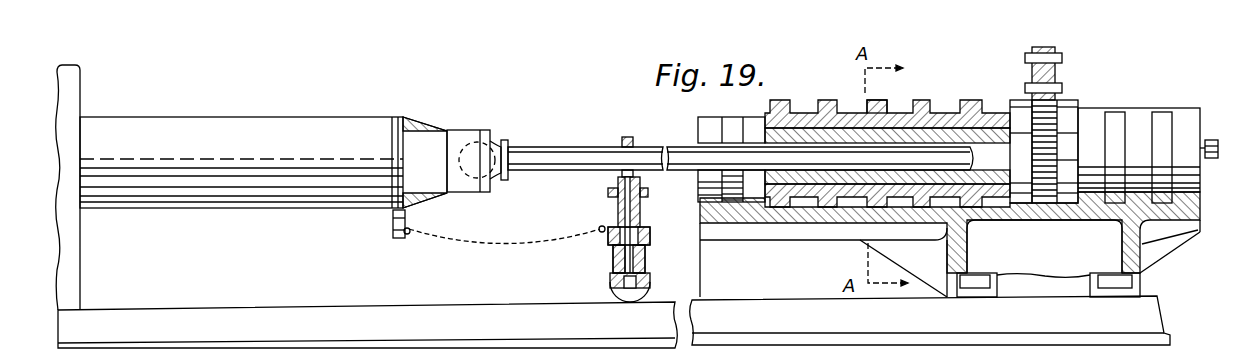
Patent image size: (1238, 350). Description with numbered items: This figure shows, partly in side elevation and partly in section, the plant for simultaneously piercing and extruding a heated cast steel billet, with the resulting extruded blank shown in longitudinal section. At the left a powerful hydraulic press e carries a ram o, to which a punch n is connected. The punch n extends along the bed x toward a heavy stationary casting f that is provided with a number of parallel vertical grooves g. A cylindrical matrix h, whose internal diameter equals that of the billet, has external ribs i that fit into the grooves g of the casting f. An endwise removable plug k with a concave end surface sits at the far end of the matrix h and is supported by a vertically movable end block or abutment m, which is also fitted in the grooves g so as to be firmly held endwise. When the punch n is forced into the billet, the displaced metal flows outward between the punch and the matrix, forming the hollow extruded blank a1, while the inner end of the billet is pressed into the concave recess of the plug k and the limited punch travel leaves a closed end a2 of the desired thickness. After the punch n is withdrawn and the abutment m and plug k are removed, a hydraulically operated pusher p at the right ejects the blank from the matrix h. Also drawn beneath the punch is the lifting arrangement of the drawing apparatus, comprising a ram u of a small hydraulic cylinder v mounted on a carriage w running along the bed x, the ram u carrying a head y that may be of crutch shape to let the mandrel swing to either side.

The hydraulic press e is at (65, 103).
The ram o is at (294, 162).
The punch n is at (687, 146).
The bed x is at (480, 302).
The head y is at (648, 201).
The ram u is at (614, 255).
The small hydraulic cylinder v is at (646, 258).
The carriage w is at (616, 283).
The cylindrical matrix h is at (796, 127).
The external ribs i is at (878, 101).
The hollow extruded blank a1 is at (930, 132).
The plug k is at (1000, 108).
The end block or abutment m is at (1050, 128).
The pusher p is at (1210, 156).
The closed end a2 is at (998, 210).
The vertical grooves g is at (782, 210).
The stationary casting f is at (857, 214).